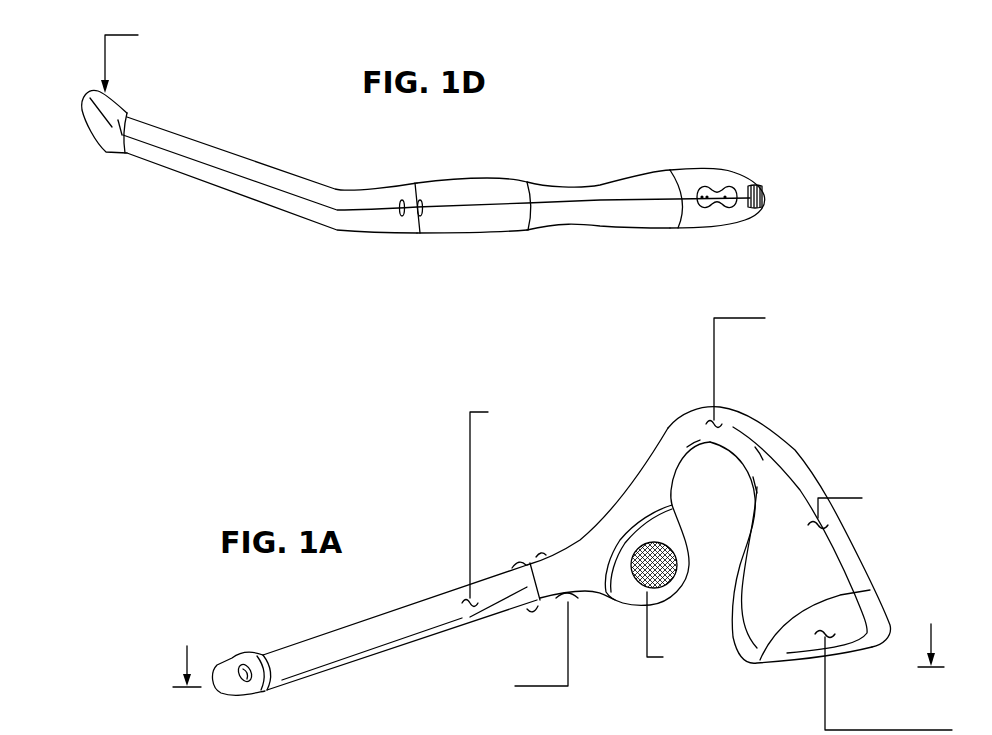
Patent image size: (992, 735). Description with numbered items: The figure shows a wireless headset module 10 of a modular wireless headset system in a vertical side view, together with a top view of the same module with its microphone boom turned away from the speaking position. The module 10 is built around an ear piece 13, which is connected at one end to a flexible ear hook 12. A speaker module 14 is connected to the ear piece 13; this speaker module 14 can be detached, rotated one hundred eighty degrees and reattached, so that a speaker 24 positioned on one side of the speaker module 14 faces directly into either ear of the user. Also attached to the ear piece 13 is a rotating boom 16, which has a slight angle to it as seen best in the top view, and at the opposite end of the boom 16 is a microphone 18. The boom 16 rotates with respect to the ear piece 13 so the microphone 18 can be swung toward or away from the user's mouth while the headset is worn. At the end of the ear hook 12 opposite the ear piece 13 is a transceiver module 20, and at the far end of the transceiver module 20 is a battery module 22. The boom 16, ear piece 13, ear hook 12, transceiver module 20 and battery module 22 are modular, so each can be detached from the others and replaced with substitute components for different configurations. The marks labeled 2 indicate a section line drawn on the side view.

In FIG. 1A, the section line 2- 2 is at (558, 642).
In FIG. 1D, the wireless headset module 10 is at (609, 244).
In FIG. 1A, the wireless headset module 10 is at (667, 396).
In FIG. 1D, the flexible ear hook 12 is at (543, 188).
In FIG. 1A, the flexible ear hook 12 is at (758, 422).
In FIG. 1D, the ear piece 13 is at (483, 185).
In FIG. 1A, the ear piece 13 is at (607, 517).
In FIG. 1A, the speaker module 14 is at (631, 616).
In FIG. 1D, the rotating boom 16 is at (290, 180).
In FIG. 1A, the rotating boom 16 is at (415, 603).
In FIG. 1D, the microphone 18 is at (113, 109).
In FIG. 1A, the microphone 18 is at (224, 660).
In FIG. 1D, the transceiver module 20 is at (715, 172).
In FIG. 1A, the transceiver module 20 is at (807, 483).
In FIG. 1A, the battery module 22 is at (800, 652).
In FIG. 1A, the speaker 24 is at (628, 584).